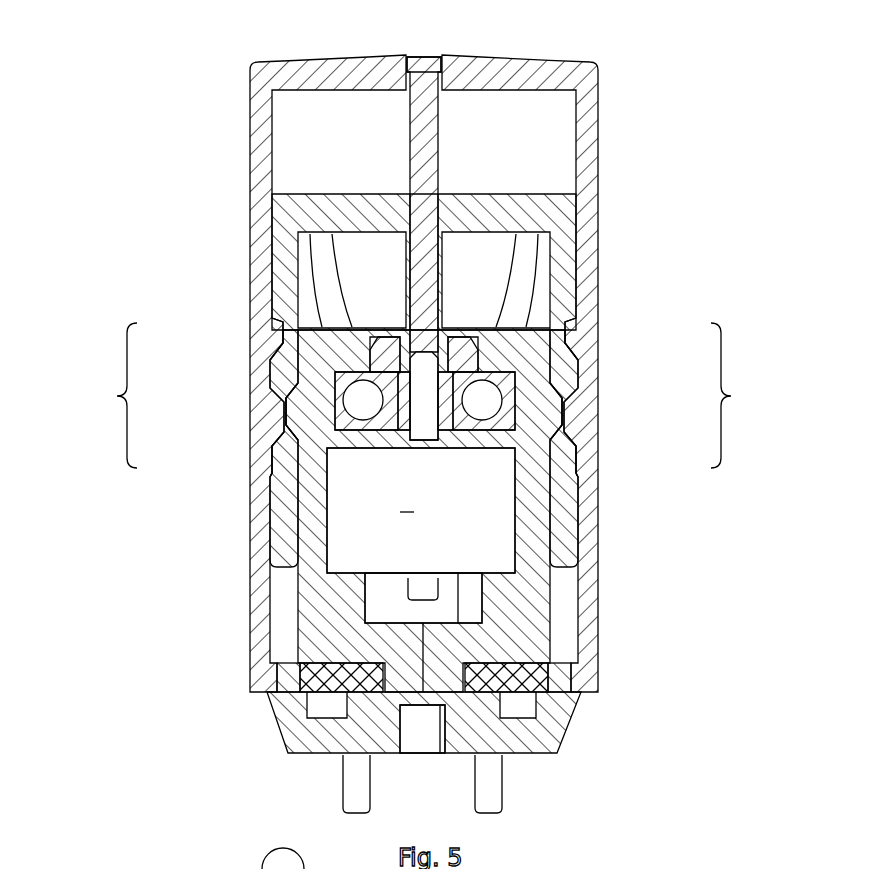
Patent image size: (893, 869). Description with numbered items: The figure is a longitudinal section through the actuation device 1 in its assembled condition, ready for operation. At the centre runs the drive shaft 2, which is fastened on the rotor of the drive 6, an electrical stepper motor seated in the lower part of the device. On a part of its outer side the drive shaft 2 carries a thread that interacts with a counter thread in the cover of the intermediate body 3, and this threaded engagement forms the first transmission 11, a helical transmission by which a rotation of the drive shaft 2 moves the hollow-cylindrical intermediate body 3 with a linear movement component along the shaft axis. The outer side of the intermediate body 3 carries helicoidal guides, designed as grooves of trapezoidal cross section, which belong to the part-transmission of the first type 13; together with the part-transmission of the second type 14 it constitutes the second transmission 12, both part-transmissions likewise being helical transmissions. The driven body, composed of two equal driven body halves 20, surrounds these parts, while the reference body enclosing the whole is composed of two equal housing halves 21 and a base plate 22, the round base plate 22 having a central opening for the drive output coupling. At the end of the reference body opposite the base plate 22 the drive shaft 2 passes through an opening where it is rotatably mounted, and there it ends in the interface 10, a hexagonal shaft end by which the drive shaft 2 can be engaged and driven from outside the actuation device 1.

The actuation device 1 is at (112, 141).
The drive shaft 2 is at (427, 138).
The intermediate body 3 is at (480, 203).
The drive 6 is at (421, 535).
The interface 10 is at (420, 63).
The first transmission 11 is at (392, 176).
The second transmission 12 is at (428, 395).
The part-transmission of the first type 13 is at (260, 333).
The part-transmission of the second type 14 is at (272, 411).
The driven body halves 20 is at (310, 600).
The housing halves 21 is at (258, 670).
The base plate 22 is at (551, 722).